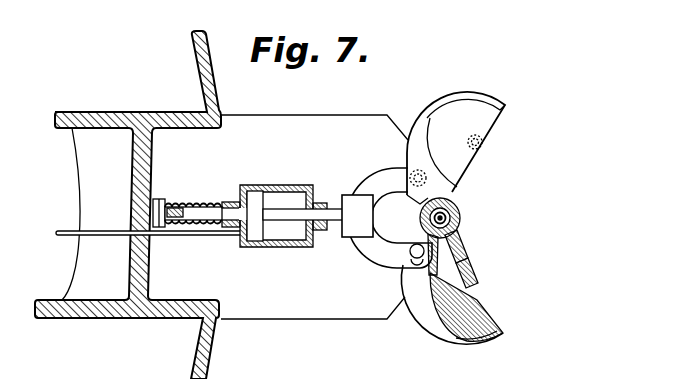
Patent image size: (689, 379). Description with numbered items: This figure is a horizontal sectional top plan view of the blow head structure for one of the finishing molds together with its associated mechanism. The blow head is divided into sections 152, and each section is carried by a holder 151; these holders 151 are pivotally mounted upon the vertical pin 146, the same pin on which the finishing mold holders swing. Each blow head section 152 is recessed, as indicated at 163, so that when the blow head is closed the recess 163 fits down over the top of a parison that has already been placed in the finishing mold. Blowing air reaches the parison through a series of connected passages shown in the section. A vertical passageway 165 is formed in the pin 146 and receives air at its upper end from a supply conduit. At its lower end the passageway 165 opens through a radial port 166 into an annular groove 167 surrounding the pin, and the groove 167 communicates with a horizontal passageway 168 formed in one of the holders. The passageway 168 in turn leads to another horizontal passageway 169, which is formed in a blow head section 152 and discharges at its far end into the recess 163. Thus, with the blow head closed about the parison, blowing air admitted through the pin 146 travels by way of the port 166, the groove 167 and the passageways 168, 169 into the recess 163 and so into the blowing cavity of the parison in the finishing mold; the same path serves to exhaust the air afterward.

The vertical pin 146 is at (462, 198).
The holder 151 is at (424, 309).
The blow head section 152 is at (511, 318).
The recess 163 is at (476, 290).
The vertical passageway 165 is at (458, 212).
The radial port 166 is at (460, 228).
The annular groove 167 is at (471, 244).
The horizontal passageway 168 is at (447, 250).
The horizontal passageway 169 is at (468, 268).